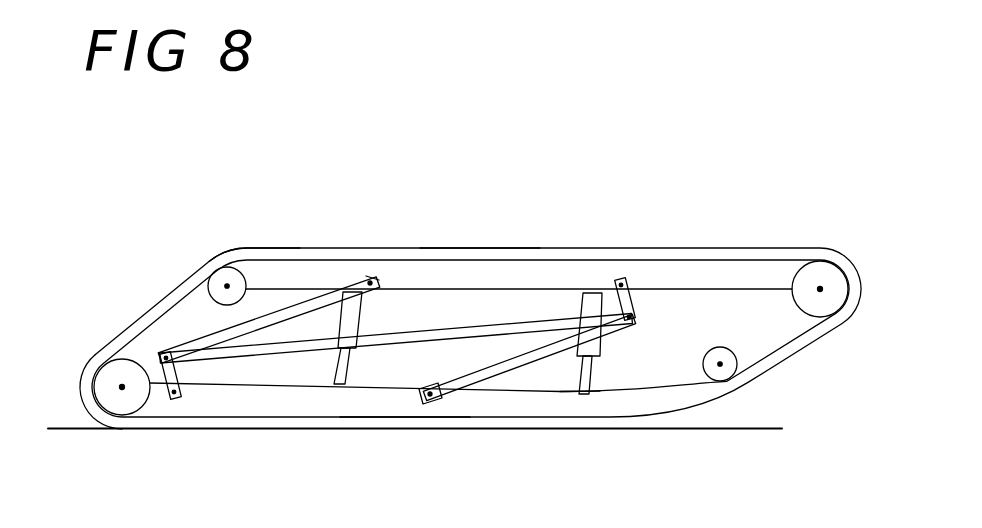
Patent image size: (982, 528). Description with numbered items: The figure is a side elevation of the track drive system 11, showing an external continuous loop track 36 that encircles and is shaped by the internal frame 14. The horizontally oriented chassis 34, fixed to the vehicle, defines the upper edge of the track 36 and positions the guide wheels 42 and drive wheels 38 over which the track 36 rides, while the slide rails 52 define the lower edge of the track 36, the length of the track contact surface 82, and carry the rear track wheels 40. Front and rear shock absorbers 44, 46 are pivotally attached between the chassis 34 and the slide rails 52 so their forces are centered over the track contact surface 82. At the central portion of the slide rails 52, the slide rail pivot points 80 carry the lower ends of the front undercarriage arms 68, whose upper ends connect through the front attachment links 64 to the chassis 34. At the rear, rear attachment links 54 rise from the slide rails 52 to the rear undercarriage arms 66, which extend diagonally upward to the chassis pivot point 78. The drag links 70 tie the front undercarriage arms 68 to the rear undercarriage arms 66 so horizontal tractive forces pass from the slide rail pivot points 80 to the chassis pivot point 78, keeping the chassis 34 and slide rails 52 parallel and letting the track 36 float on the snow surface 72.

The track drive system 11 is at (720, 243).
The internal frame 14 is at (358, 255).
The chassis 34 is at (474, 272).
The track 36 is at (290, 250).
The drive wheels 38 is at (820, 271).
The rear track wheels 40 is at (118, 372).
The guide wheels 42 is at (222, 272).
The front shock absorber 44 is at (590, 393).
The rear shock absorber 46 is at (337, 383).
The slide rails 52 is at (647, 400).
The rear attachment links 54 is at (177, 405).
The front attachment links 64 is at (625, 273).
The rear undercarriage arms 66 is at (227, 326).
The front undercarriage arms 68 is at (502, 372).
The drag links 70 is at (257, 357).
The snow surface 72 is at (65, 423).
The chassis pivot point 78 is at (379, 271).
The slide rail pivot points 80 is at (433, 405).
The track contact surface 82 is at (407, 430).